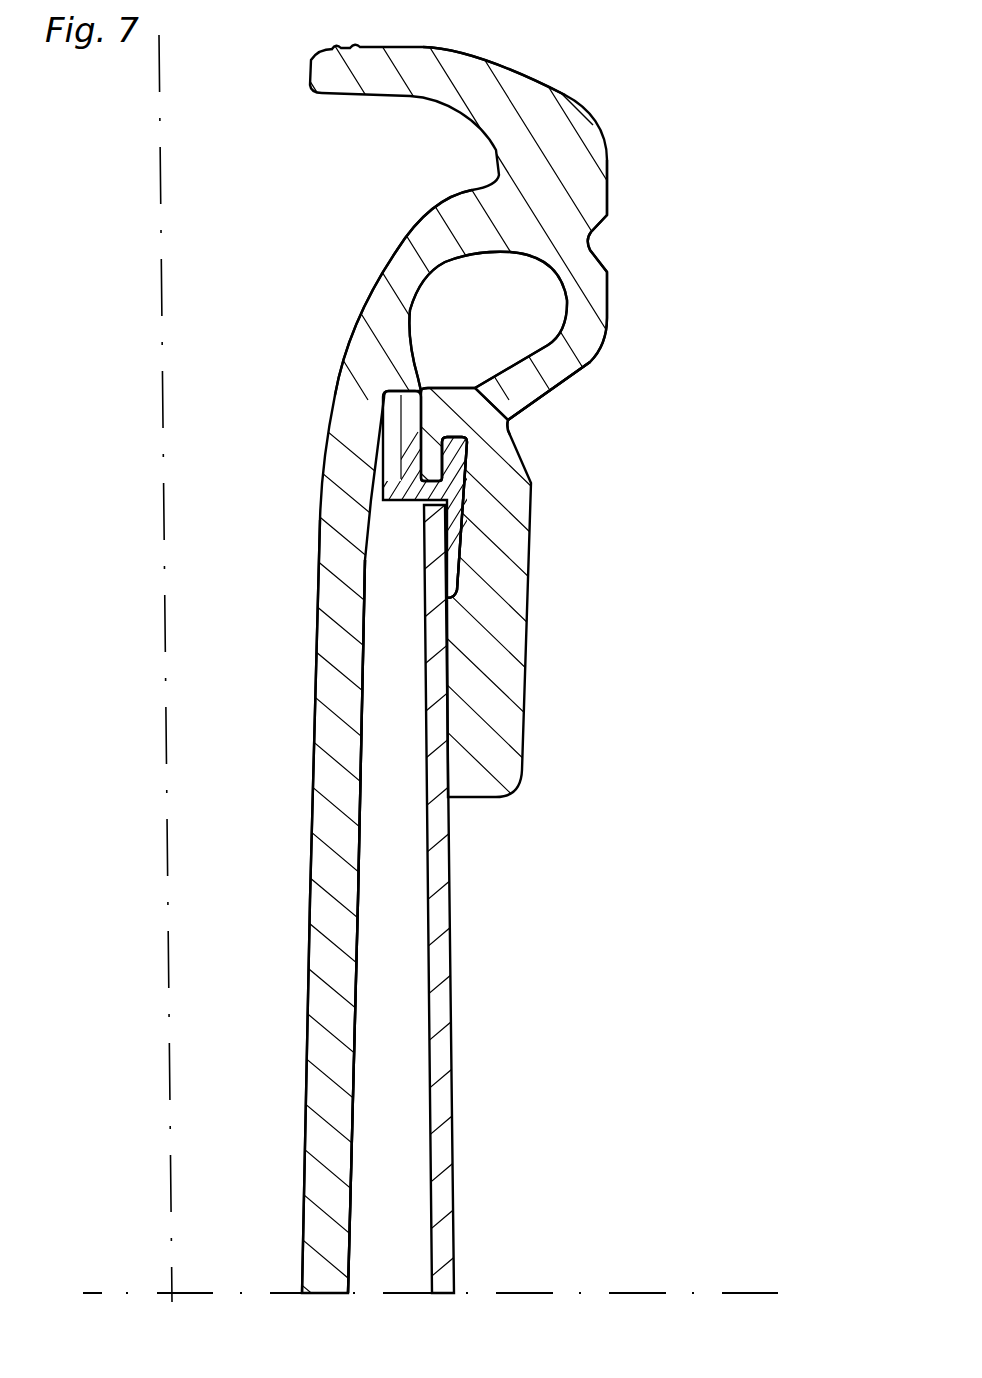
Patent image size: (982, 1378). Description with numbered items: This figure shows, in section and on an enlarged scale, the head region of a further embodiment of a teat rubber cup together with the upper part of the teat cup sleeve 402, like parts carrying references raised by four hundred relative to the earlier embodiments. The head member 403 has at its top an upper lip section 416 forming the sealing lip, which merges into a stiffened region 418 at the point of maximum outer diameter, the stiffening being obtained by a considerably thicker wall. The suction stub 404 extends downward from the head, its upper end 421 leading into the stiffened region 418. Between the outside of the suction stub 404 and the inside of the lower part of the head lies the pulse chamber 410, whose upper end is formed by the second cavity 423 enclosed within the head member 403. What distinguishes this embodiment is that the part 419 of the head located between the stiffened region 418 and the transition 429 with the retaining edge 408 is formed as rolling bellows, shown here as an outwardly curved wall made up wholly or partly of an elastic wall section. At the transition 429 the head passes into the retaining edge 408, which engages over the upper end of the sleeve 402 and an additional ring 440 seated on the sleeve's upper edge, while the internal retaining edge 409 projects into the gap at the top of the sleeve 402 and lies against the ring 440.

The teat cup sleeve 402 is at (433, 967).
The head member 403 is at (547, 72).
The suction stub 404 is at (328, 866).
The retaining edge 408 is at (500, 657).
The internal retaining edge 409 is at (432, 463).
The pulse chamber 410 is at (412, 938).
The upper lip section 416 is at (457, 82).
The stiffened region 418 is at (590, 207).
The part of head member in the form of rolling bellows 419 is at (588, 342).
The upper end of suction stub 421 is at (468, 215).
The second cavity 423 is at (517, 330).
The transition 429 is at (472, 412).
The ring 440 is at (457, 500).